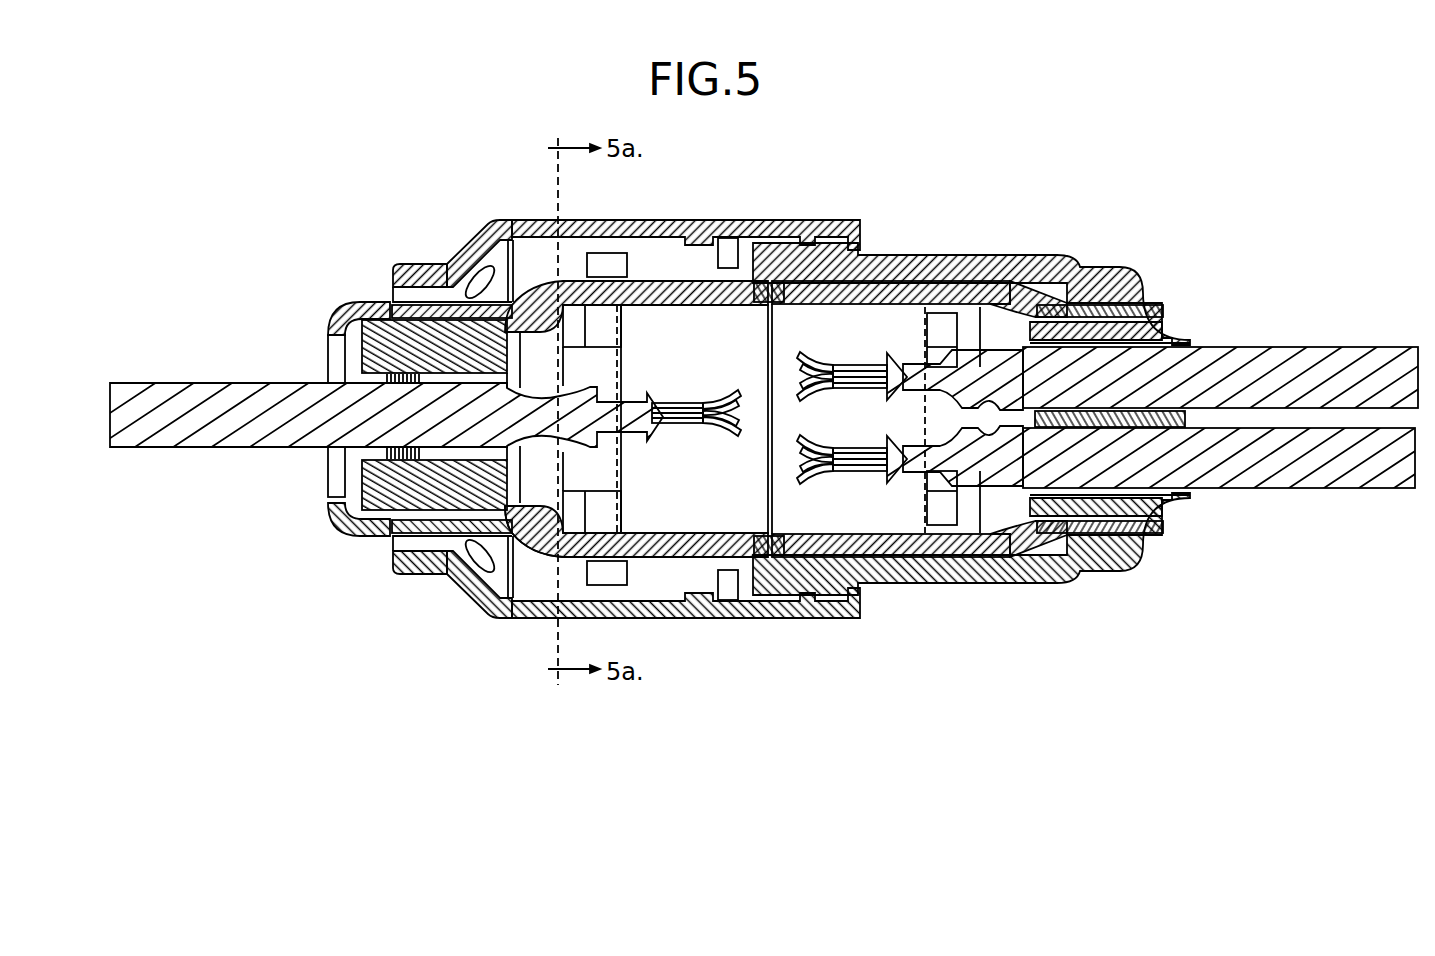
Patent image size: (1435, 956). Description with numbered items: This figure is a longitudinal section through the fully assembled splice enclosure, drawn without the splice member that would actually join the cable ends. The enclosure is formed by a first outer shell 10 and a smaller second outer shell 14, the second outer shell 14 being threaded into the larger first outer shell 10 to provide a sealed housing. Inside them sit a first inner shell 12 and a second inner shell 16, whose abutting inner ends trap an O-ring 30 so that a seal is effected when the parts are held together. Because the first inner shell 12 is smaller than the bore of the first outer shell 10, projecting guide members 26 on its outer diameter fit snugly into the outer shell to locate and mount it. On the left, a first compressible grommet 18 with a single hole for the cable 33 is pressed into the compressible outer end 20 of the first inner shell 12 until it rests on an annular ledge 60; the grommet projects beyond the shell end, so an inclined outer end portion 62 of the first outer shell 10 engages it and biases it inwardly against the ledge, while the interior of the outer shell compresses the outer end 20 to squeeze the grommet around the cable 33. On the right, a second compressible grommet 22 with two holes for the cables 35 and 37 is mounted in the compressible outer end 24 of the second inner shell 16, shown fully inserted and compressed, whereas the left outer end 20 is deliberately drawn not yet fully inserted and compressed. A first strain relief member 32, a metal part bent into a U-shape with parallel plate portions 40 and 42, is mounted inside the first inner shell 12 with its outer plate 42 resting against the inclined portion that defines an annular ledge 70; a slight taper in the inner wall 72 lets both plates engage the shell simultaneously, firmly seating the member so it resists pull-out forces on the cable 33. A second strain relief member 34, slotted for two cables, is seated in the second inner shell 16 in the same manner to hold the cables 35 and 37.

The first outer shell 10 is at (762, 214).
The first inner shell 12 is at (662, 292).
The second outer shell 14 is at (1018, 248).
The second inner shell 16 is at (918, 283).
The first compressible grommet 18 is at (400, 487).
The compressible outer end 20 is at (388, 556).
The second compressible grommet 22 is at (1143, 330).
The compressible outer end 24 is at (1142, 290).
The projecting guide members 26 is at (596, 252).
The O-ring 30 is at (783, 536).
The first strain relief member 32 is at (632, 340).
The cable 33 is at (258, 449).
The second strain relief member 34 is at (920, 334).
The cable 35 is at (1340, 347).
The cable 37 is at (1323, 492).
The plate portion 40 is at (620, 378).
The plate portion 42 is at (531, 548).
The annular ledge 60 is at (462, 580).
The inclined outer end portion 62 is at (345, 303).
The annular ledge 70 is at (561, 369).
The inner wall 72 is at (650, 533).